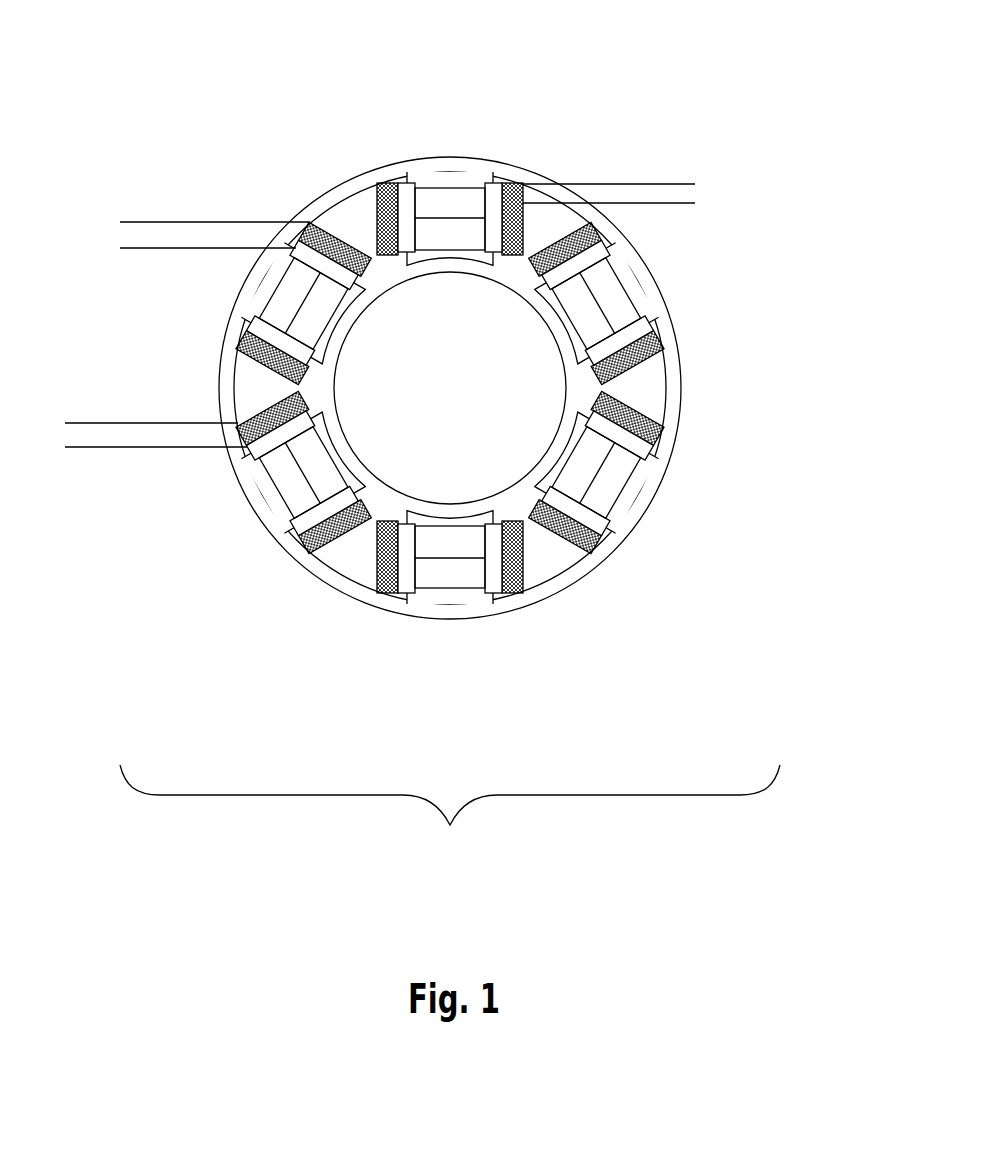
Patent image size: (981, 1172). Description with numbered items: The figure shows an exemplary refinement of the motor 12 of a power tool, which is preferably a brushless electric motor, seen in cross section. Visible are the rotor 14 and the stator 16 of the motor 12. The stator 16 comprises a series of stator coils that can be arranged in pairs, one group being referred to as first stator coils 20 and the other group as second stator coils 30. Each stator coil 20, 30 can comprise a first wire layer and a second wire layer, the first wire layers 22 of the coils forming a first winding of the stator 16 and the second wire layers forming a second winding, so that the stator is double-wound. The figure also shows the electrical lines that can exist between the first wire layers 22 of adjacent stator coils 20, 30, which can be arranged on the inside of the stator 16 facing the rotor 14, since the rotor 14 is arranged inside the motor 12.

The motor 12 is at (422, 436).
The rotor 14 is at (430, 348).
The stator 16 is at (648, 522).
The first stator coils 20 is at (453, 170).
The first wire layers 22 is at (403, 197).
The second stator coils 30 is at (455, 592).